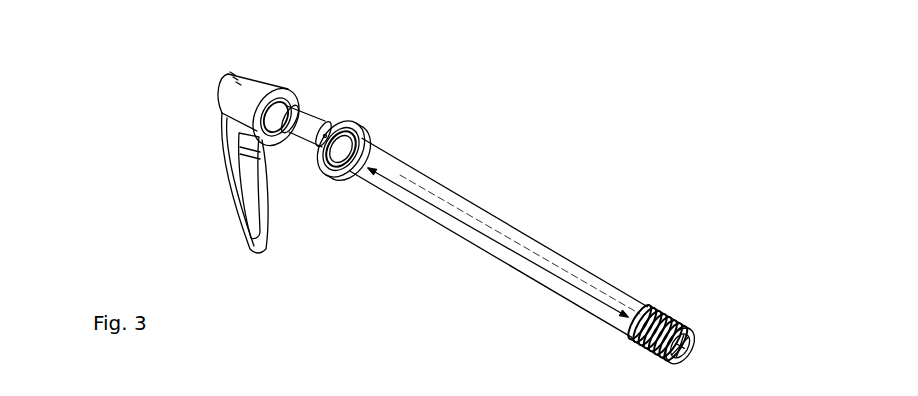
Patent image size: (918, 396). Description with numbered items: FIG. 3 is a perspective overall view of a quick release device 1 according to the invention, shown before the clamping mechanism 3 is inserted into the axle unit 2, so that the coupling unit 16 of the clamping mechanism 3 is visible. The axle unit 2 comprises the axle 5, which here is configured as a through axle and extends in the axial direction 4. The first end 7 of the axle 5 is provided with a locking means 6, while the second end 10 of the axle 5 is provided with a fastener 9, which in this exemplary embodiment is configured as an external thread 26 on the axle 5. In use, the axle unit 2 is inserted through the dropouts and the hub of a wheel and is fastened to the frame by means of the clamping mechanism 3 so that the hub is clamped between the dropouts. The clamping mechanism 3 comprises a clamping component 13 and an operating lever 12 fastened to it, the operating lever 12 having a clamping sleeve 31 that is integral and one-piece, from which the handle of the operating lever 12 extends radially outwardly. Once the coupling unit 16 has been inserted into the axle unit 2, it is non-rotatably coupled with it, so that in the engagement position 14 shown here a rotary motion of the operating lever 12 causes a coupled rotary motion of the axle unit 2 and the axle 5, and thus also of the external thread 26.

The quick release device 1 is at (638, 142).
The axle unit 2 is at (428, 132).
The clamping mechanism 3 is at (333, 82).
The axial direction 4 is at (477, 229).
The axle 5 is at (565, 257).
The locking means 6 is at (333, 190).
The first end 7 is at (381, 142).
The fastener 9 is at (648, 350).
The second end 10 is at (697, 318).
The operating lever 12 is at (227, 190).
The clamping component 13 is at (290, 95).
The engagement position 14 is at (198, 90).
The coupling unit 16 is at (302, 143).
The external thread 26 is at (654, 351).
The clamping sleeve 31 is at (250, 73).